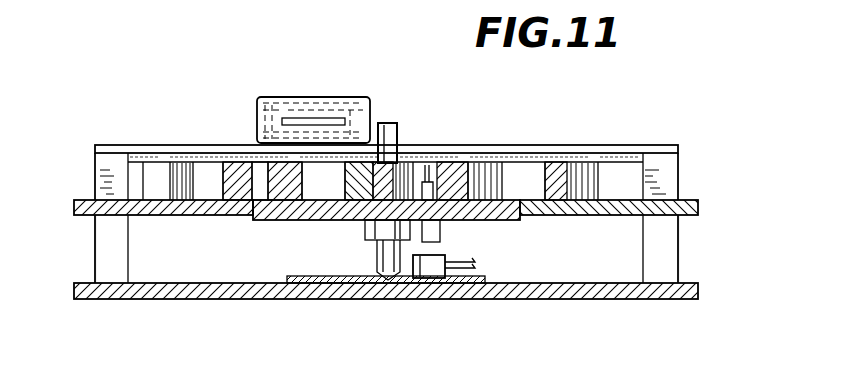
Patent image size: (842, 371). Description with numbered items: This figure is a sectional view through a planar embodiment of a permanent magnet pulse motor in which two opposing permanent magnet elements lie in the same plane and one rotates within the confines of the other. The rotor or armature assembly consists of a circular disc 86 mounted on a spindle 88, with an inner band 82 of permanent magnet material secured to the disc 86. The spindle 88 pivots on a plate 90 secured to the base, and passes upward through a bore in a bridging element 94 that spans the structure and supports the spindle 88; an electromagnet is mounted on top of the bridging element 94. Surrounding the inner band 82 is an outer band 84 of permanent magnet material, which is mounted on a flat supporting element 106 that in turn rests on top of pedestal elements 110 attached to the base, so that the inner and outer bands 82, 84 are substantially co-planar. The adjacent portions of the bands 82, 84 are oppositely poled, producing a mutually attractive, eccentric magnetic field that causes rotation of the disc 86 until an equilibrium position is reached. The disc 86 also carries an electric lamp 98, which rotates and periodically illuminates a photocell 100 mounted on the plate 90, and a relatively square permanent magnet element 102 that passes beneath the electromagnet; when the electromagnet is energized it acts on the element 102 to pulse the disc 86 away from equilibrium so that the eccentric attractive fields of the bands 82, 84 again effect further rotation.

The inner band 82 is at (275, 175).
The outer band 84 is at (236, 190).
The circular disc 86 is at (512, 220).
The spindle 88 is at (400, 133).
The plate 90 is at (324, 276).
The bridging element 94 is at (612, 147).
The electric lamp 98 is at (441, 227).
The photocell 100 is at (428, 268).
The square permanent magnet element 102 is at (313, 201).
The flat supporting element 106 is at (598, 217).
The pedestal elements 110 is at (95, 240).